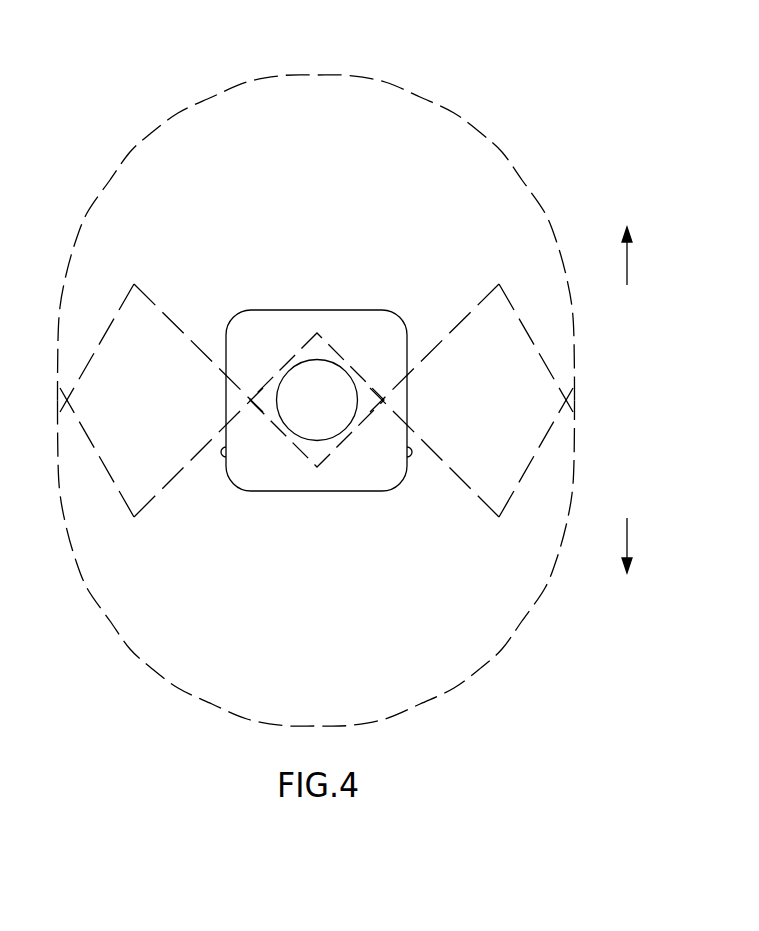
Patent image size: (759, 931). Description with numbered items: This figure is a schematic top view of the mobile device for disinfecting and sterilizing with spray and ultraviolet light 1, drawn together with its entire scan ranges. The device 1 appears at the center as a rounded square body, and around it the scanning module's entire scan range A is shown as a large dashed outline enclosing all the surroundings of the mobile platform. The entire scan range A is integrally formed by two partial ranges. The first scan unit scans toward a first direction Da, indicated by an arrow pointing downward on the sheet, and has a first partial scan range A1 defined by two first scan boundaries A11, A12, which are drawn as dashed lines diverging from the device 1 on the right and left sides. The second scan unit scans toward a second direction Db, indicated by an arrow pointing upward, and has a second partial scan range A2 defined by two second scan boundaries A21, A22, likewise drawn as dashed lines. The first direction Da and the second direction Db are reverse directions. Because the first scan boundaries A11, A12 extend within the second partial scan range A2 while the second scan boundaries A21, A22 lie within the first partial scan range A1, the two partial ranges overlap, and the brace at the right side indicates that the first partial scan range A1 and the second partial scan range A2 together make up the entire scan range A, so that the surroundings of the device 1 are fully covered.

The mobile device for disinfecting and sterilizing with spray and ultraviolet light 1 is at (376, 309).
The entire scan range A is at (371, 400).
The first partial scan range A1 is at (345, 564).
The second partial scan range A2 is at (575, 323).
The first scan boundary A11 is at (456, 323).
The first scan boundary A12 is at (177, 323).
The second scan boundary A21 is at (456, 477).
The second scan boundary A22 is at (177, 477).
The first direction Da is at (641, 545).
The second direction Db is at (641, 256).